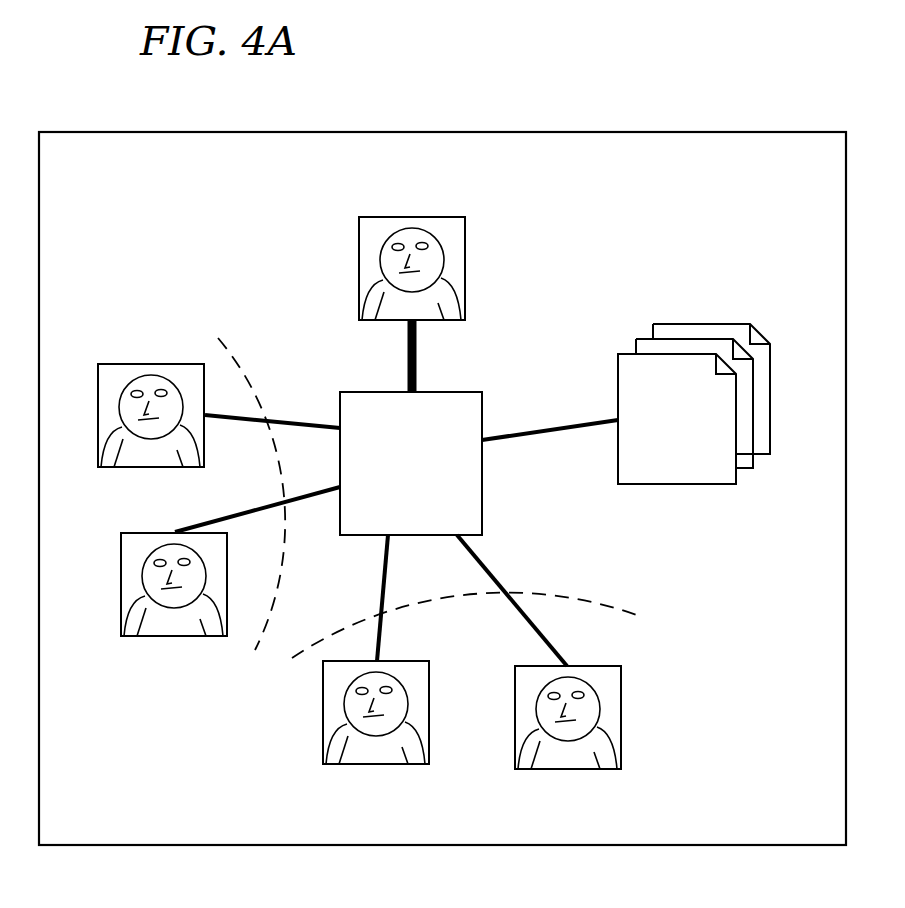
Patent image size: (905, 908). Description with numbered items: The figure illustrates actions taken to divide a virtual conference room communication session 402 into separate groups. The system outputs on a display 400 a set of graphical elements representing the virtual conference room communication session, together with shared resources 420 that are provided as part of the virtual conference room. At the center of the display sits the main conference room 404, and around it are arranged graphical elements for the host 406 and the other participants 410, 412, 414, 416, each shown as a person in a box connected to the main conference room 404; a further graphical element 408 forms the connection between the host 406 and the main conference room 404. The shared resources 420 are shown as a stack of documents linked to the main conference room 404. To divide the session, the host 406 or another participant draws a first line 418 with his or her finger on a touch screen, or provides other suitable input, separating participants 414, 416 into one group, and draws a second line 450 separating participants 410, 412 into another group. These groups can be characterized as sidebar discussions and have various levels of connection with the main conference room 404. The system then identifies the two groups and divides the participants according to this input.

The display 400 is at (607, 132).
The virtual conference room communication session 402 is at (592, 265).
The main conference room 404 is at (482, 472).
The host 406 is at (359, 258).
The graphical element 408 is at (417, 361).
The participant 410 is at (155, 364).
The participant 412 is at (167, 636).
The participant 414 is at (374, 765).
The participant 416 is at (566, 770).
The first line 418 is at (547, 596).
The shared resources 420 is at (708, 327).
The second line 450 is at (250, 380).